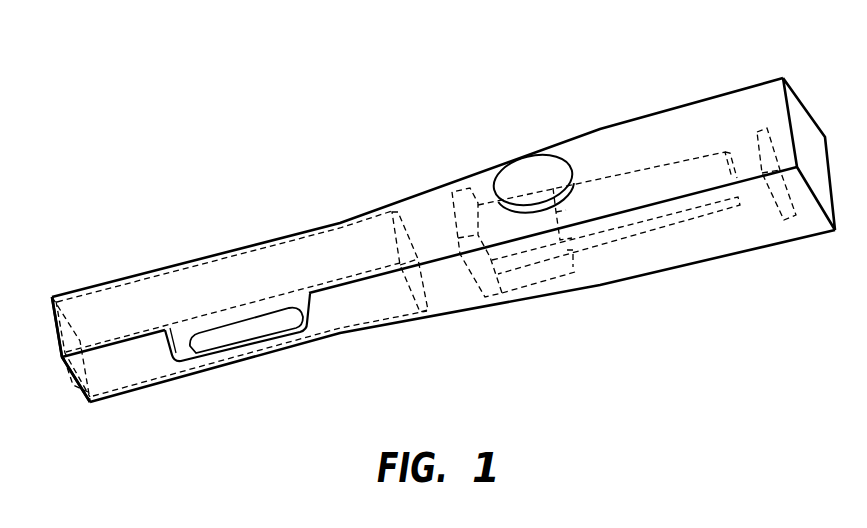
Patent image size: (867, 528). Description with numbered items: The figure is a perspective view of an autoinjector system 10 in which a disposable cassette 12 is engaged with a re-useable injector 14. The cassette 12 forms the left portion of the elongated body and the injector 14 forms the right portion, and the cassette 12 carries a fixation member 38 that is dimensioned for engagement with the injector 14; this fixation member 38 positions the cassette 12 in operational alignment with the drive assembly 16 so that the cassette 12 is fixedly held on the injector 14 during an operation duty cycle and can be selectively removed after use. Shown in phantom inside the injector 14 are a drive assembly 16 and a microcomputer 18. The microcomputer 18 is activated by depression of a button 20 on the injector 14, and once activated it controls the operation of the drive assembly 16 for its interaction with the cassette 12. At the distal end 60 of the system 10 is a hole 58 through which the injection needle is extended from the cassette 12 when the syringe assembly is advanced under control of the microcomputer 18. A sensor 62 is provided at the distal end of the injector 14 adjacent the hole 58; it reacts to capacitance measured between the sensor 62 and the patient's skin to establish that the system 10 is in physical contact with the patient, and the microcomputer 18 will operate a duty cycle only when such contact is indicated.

The autoinjector system 10 is at (272, 156).
The disposable cassette 12 is at (255, 262).
The re-useable injector 14 is at (653, 128).
The drive assembly 16 is at (572, 251).
The microcomputer 18 is at (761, 126).
The button 20 is at (533, 178).
The fixation member 38 is at (186, 350).
The hole 58 is at (72, 382).
The distal end 60 is at (58, 340).
The sensor 62 is at (58, 342).